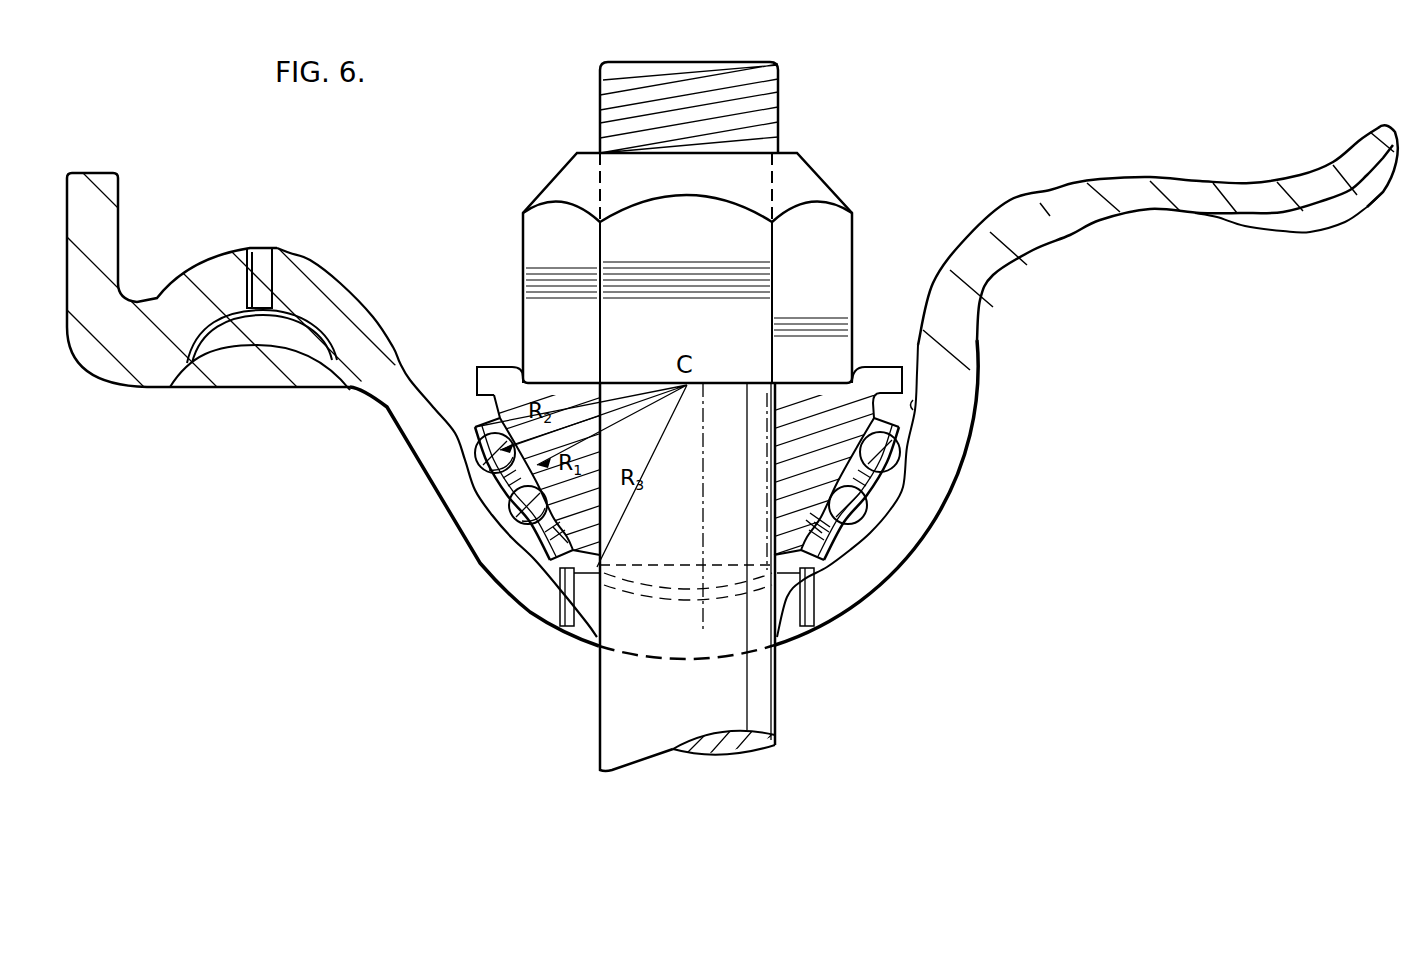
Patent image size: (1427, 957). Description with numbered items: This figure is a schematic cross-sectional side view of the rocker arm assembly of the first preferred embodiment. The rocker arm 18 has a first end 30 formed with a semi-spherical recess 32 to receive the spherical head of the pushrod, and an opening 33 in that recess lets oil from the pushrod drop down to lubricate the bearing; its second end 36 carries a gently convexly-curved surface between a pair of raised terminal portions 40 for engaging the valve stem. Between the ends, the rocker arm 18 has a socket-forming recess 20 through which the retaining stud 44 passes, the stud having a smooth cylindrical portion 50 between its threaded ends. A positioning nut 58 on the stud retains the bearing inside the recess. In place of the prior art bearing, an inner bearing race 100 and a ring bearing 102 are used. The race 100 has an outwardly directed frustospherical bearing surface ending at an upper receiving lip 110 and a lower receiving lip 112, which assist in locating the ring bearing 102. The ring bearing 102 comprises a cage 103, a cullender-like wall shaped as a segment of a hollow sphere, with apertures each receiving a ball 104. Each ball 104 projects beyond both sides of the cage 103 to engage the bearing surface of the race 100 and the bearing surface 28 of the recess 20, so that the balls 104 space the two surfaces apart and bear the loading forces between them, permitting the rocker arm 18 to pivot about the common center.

The rocker arm 18 is at (1042, 203).
The socket-forming recess 20 is at (496, 548).
The bearing surface 28 is at (917, 405).
The first end 30 is at (118, 367).
The semi-spherical recess 32 is at (288, 355).
The opening 33 is at (260, 266).
The second end 36 is at (1372, 193).
The raised terminal portions 40 is at (1343, 223).
The retaining stud 44 is at (788, 703).
The smooth cylindrical portion 50 is at (790, 535).
The positioning nut 58 is at (833, 228).
The inner bearing race 100 is at (920, 384).
The ring bearing 102 is at (492, 502).
The cage 103 is at (905, 497).
The ball 104 is at (478, 458).
The upper receiving lip 110 is at (873, 368).
The lower receiving lip 112 is at (566, 580).